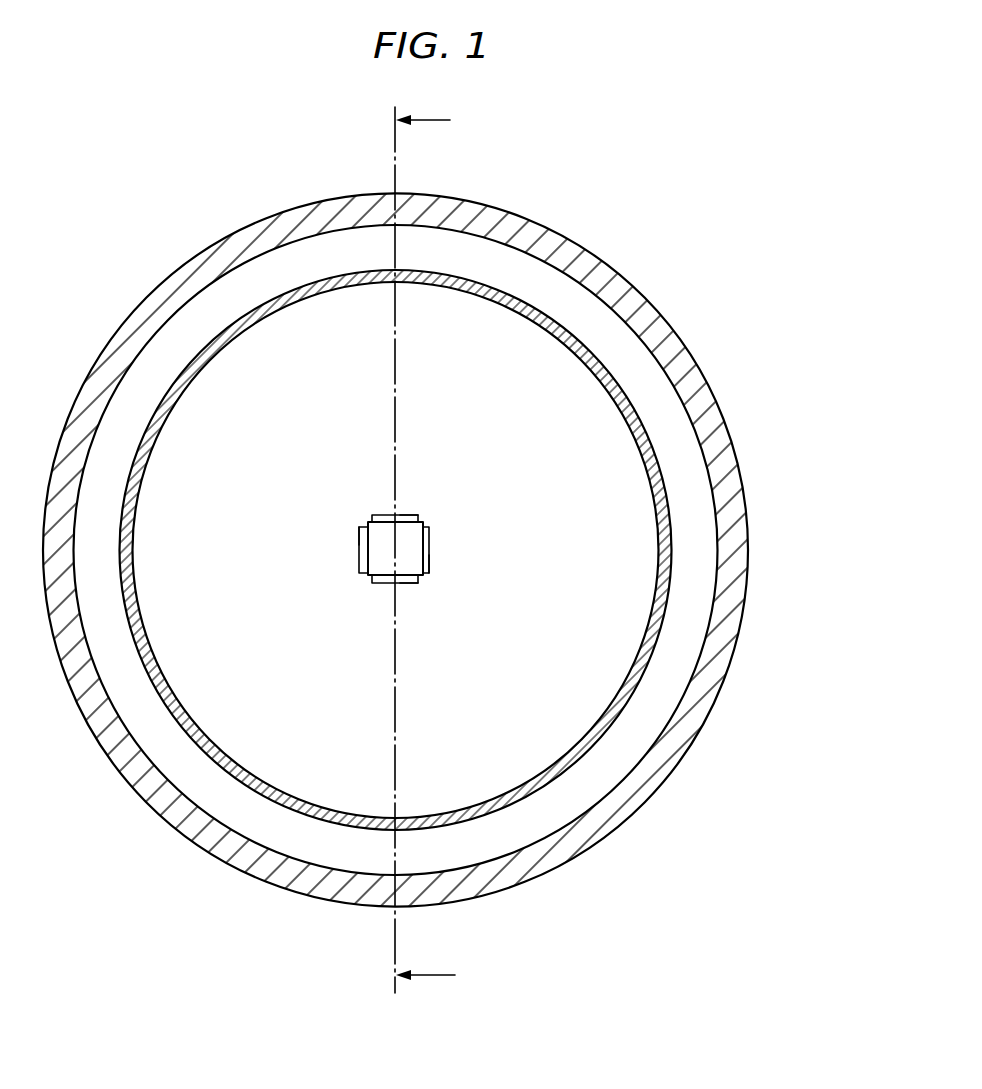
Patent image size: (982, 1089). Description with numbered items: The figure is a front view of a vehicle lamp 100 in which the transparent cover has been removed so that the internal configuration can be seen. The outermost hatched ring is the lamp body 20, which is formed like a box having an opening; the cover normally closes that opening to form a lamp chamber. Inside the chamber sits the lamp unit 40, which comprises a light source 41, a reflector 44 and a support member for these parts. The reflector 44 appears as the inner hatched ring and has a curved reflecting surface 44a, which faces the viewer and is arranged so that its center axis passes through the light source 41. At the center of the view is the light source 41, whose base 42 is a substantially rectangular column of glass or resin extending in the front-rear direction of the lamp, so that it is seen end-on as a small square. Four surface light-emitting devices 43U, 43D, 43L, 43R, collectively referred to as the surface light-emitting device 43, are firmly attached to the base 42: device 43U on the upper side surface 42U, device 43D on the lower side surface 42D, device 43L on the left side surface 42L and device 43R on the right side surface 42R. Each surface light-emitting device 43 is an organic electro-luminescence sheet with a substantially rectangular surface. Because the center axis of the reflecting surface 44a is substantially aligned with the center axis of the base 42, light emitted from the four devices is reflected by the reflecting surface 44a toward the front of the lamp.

The vehicle lamp 100 is at (434, 580).
The lamp body 20 is at (583, 248).
The lamp unit 40 is at (473, 262).
The reflector 44 is at (633, 400).
The reflecting surface 44a is at (628, 519).
The light source 41 is at (406, 529).
The base 42 is at (391, 529).
The upper side surface 42U is at (388, 515).
The lower side surface 42D is at (383, 585).
The left side surface 42L is at (428, 542).
The right side surface 42R is at (360, 557).
The surface light-emitting device 43 is at (412, 548).
The surface light-emitting device 43U is at (407, 513).
The surface light-emitting device 43D is at (405, 587).
The surface light-emitting device 43L is at (430, 557).
The surface light-emitting device 43R is at (360, 535).